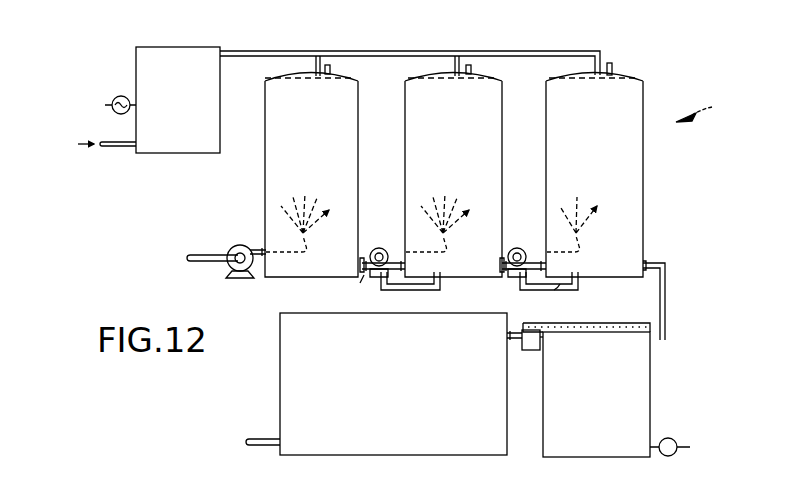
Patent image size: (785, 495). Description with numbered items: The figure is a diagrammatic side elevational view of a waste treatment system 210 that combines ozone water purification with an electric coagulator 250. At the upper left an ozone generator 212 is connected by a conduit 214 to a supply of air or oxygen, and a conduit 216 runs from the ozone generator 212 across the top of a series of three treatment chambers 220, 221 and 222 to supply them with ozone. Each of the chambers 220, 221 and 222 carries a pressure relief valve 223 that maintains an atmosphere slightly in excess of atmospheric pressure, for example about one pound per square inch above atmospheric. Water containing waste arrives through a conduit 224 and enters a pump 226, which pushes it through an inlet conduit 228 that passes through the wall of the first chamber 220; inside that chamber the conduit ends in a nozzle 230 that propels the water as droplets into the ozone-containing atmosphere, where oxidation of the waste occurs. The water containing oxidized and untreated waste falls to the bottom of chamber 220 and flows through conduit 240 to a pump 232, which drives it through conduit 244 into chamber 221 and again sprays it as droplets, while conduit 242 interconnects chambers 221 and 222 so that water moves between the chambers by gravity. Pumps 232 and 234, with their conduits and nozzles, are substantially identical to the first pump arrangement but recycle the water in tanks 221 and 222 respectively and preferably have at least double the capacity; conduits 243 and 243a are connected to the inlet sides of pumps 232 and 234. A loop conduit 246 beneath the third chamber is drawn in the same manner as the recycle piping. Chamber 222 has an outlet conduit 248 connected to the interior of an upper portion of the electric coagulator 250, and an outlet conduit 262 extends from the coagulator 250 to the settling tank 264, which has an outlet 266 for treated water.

The waste treatment system 210 is at (711, 110).
The ozone generator 212 is at (162, 56).
The conduit 214 is at (120, 150).
The conduit 216 is at (408, 51).
The treatment chamber 220 is at (265, 186).
The treatment chamber 221 is at (408, 186).
The treatment chamber 222 is at (548, 186).
The pressure relief valve 223 is at (333, 71).
The conduit 224 is at (197, 256).
The pump 226 is at (228, 278).
The inlet conduit 228 is at (245, 245).
The nozzle 230 is at (300, 261).
The pump 232 is at (384, 245).
The pump 234 is at (527, 245).
The conduit 240 is at (366, 274).
The conduit 242 is at (506, 277).
The conduit 243 is at (419, 292).
The conduit 243a is at (565, 292).
The conduit 244 is at (382, 277).
The transfer pipe 246 is at (537, 278).
The outlet conduit 248 is at (653, 265).
The electric coagulator 250 is at (644, 376).
The outlet conduit 262 is at (525, 352).
The settling tank 264 is at (280, 366).
The outlet 266 is at (252, 438).